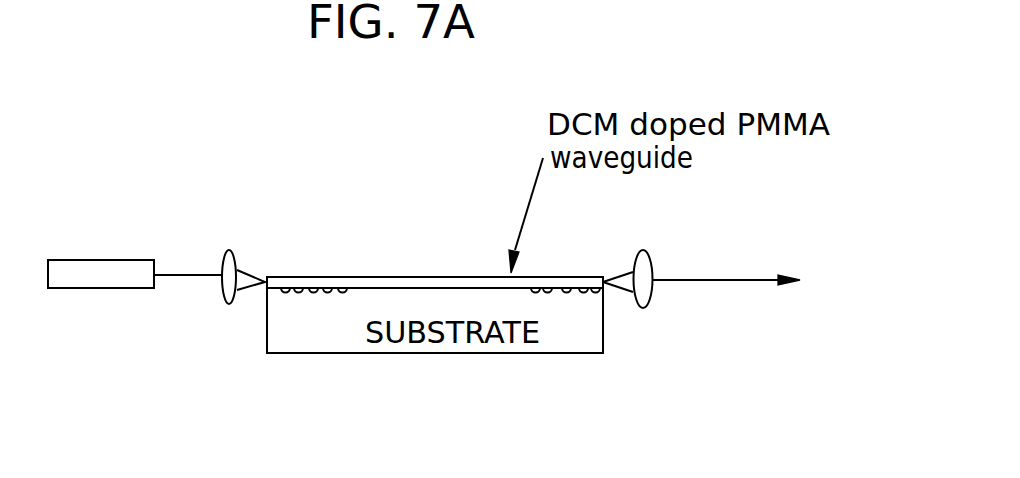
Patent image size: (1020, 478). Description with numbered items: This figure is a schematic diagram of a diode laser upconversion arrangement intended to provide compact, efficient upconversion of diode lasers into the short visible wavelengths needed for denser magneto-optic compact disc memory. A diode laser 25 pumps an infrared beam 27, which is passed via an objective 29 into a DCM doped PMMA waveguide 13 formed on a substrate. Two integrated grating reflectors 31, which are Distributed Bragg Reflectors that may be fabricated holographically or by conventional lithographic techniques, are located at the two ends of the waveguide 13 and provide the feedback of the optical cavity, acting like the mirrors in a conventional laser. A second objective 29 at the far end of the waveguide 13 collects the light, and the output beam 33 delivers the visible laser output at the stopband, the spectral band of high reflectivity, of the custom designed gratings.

The diode laser 25 is at (90, 255).
The infrared beam 27 is at (195, 282).
The objective 29 is at (238, 257).
The DCM doped PMMA waveguide 13 is at (373, 275).
The integrated grating reflectors 31 is at (568, 302).
The output beam 33 is at (757, 285).